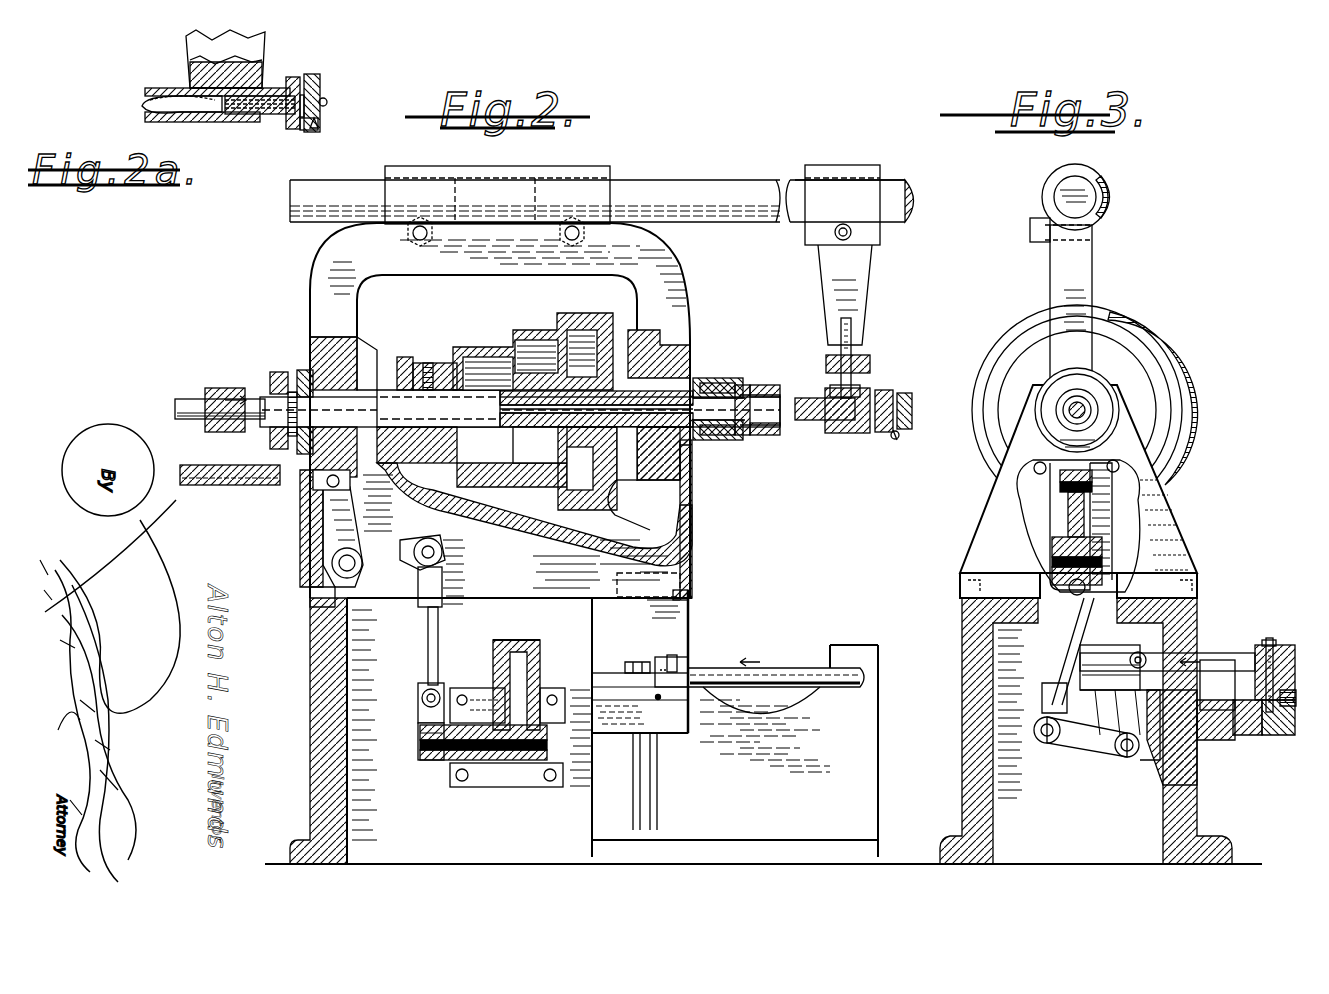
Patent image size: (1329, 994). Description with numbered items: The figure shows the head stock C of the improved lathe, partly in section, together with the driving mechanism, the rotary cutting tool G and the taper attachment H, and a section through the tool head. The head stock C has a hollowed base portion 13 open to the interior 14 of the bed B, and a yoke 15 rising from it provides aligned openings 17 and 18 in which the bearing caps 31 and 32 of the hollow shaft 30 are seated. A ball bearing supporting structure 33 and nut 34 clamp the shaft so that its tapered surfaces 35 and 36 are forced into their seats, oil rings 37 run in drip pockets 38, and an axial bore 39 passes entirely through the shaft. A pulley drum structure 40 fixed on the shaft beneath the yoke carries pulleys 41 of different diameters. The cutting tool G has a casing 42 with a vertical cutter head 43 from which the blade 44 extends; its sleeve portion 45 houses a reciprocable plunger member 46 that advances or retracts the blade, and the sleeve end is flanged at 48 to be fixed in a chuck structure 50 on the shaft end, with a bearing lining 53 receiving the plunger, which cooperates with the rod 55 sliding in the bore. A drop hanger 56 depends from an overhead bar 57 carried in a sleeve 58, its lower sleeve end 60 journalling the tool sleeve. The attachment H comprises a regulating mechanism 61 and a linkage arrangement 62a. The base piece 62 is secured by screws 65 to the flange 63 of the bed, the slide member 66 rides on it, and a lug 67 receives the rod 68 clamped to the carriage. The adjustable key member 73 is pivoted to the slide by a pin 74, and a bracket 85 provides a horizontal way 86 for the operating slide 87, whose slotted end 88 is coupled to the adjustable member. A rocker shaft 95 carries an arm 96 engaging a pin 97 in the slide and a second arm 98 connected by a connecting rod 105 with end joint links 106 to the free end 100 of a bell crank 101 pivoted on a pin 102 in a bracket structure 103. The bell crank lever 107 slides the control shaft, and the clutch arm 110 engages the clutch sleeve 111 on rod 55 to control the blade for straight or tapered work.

In FIG. 2, the base portion 13 is at (692, 550).
In FIG. 2, the interior 14 is at (345, 780).
In FIG. 2, the yoke 15 is at (340, 264).
In FIG. 3, the yoke 15 is at (1082, 284).
In FIG. 2, the aligning opening 17 is at (328, 360).
In FIG. 2, the aligning opening 18 is at (702, 384).
In FIG. 2, the hollow shaft 30 is at (408, 400).
In FIG. 2, the bearing cap 31 is at (302, 370).
In FIG. 2, the bearing cap 32 is at (310, 446).
In FIG. 2, the ball bearing supporting structure 33 is at (280, 372).
In FIG. 3, the ball bearing supporting structure 33 is at (1100, 385).
In FIG. 2, the nut 34 is at (288, 424).
In FIG. 2, the tapered surface 35 is at (378, 392).
In FIG. 2, the tapered surface 36 is at (680, 376).
In FIG. 2, the oil ring 37 is at (692, 462).
In FIG. 2, the drip pocket 38 is at (692, 488).
In FIG. 2, the axial bore 39 is at (526, 410).
In FIG. 2, the pulley drum structure 40 is at (480, 345).
In FIG. 3, the pulley drum structure 40 is at (1170, 418).
In FIG. 2, the pulley 41 is at (500, 470).
In FIG. 2A, the casing 42 is at (180, 118).
In FIG. 2, the casing 42 is at (822, 434).
In FIG. 2A, the cutter head 43 is at (308, 64).
In FIG. 2, the cutter head 43 is at (905, 408).
In FIG. 2A, the blade 44 is at (316, 125).
In FIG. 2, the blade 44 is at (893, 440).
In FIG. 2A, the sleeve portion 45 is at (140, 108).
In FIG. 2, the sleeve portion 45 is at (812, 398).
In FIG. 2, the plunger member 46 is at (786, 432).
In FIG. 2, the flange 48 is at (760, 392).
In FIG. 2, the chuck structure 50 is at (752, 448).
In FIG. 2, the bearing lining 53 is at (728, 392).
In FIG. 3, the rod 55 is at (1090, 385).
In FIG. 2A, the drop hanger 56 is at (255, 52).
In FIG. 2, the drop hanger 56 is at (835, 254).
In FIG. 2, the overhead bar 57 is at (893, 195).
In FIG. 3, the overhead bar 57 is at (1092, 210).
In FIG. 2, the sleeve 58 is at (586, 182).
In FIG. 2A, the lower sleeve end 60 is at (270, 124).
In FIG. 2, the lower sleeve end 60 is at (850, 430).
In FIG. 2, the regulating mechanism 61 is at (680, 706).
In FIG. 3, the regulating mechanism 61 is at (1230, 690).
In FIG. 2, the base piece 62 is at (660, 712).
In FIG. 3, the base piece 62 is at (1232, 740).
In FIG. 2, the linkage arrangement 62a is at (426, 610).
In FIG. 2, the flange 63 is at (638, 760).
In FIG. 3, the flange 63 is at (1288, 735).
In FIG. 2, the securing element 65 is at (565, 418).
In FIG. 3, the securing element 65 is at (1268, 735).
In FIG. 2, the slide member 66 is at (620, 693).
In FIG. 2, the upstanding lug 67 is at (686, 664).
In FIG. 2, the rod 68 is at (778, 672).
In FIG. 2, the adjustable key member 73 is at (604, 672).
In FIG. 3, the pin 74 is at (1290, 688).
In FIG. 2, the bracket 85 is at (490, 776).
In FIG. 3, the bracket 85 is at (1140, 760).
In FIG. 3, the horizontal way 86 is at (1210, 652).
In FIG. 2, the operating slide 87 is at (540, 648).
In FIG. 3, the operating slide 87 is at (1278, 640).
In FIG. 3, the slot 88 is at (1282, 648).
In FIG. 2, the rocker shaft 95 is at (540, 765).
In FIG. 3, the rocker shaft 95 is at (1128, 755).
In FIG. 2, the arm 96 is at (548, 690).
In FIG. 3, the arm 96 is at (1120, 690).
In FIG. 3, the pin 97 is at (1142, 654).
In FIG. 2, the second arm 98 is at (430, 745).
In FIG. 3, the second arm 98 is at (1095, 745).
In FIG. 2, the free end 100 is at (438, 536).
In FIG. 2, the bell crank 101 is at (345, 610).
In FIG. 2, the pin 102 is at (332, 565).
In FIG. 3, the pin 102 is at (1062, 560).
In FIG. 2, the bracket structure 103 is at (330, 522).
In FIG. 3, the bracket structure 103 is at (1030, 498).
In FIG. 2, the connecting rod 105 is at (429, 650).
In FIG. 3, the connecting rod 105 is at (1052, 640).
In FIG. 2, the end joint link / control shaft 106 is at (445, 565).
In FIG. 3, the end joint link / control shaft 106 is at (1040, 722).
In FIG. 2, the lever 107 is at (340, 540).
In FIG. 3, the lever 107 is at (1078, 520).
In FIG. 2, the clutch arm 110 is at (210, 425).
In FIG. 2, the clutch sleeve 111 is at (212, 386).
In FIG. 2, the bed B is at (805, 768).
In FIG. 3, the bed B is at (968, 655).
In FIG. 2, the head stock C is at (650, 578).
In FIG. 3, the head stock C is at (1150, 498).
In FIG. 2, the rotary cutting tool G is at (890, 410).
In FIG. 2, the taper attachment H is at (440, 628).
In FIG. 3, the taper attachment H is at (1085, 760).